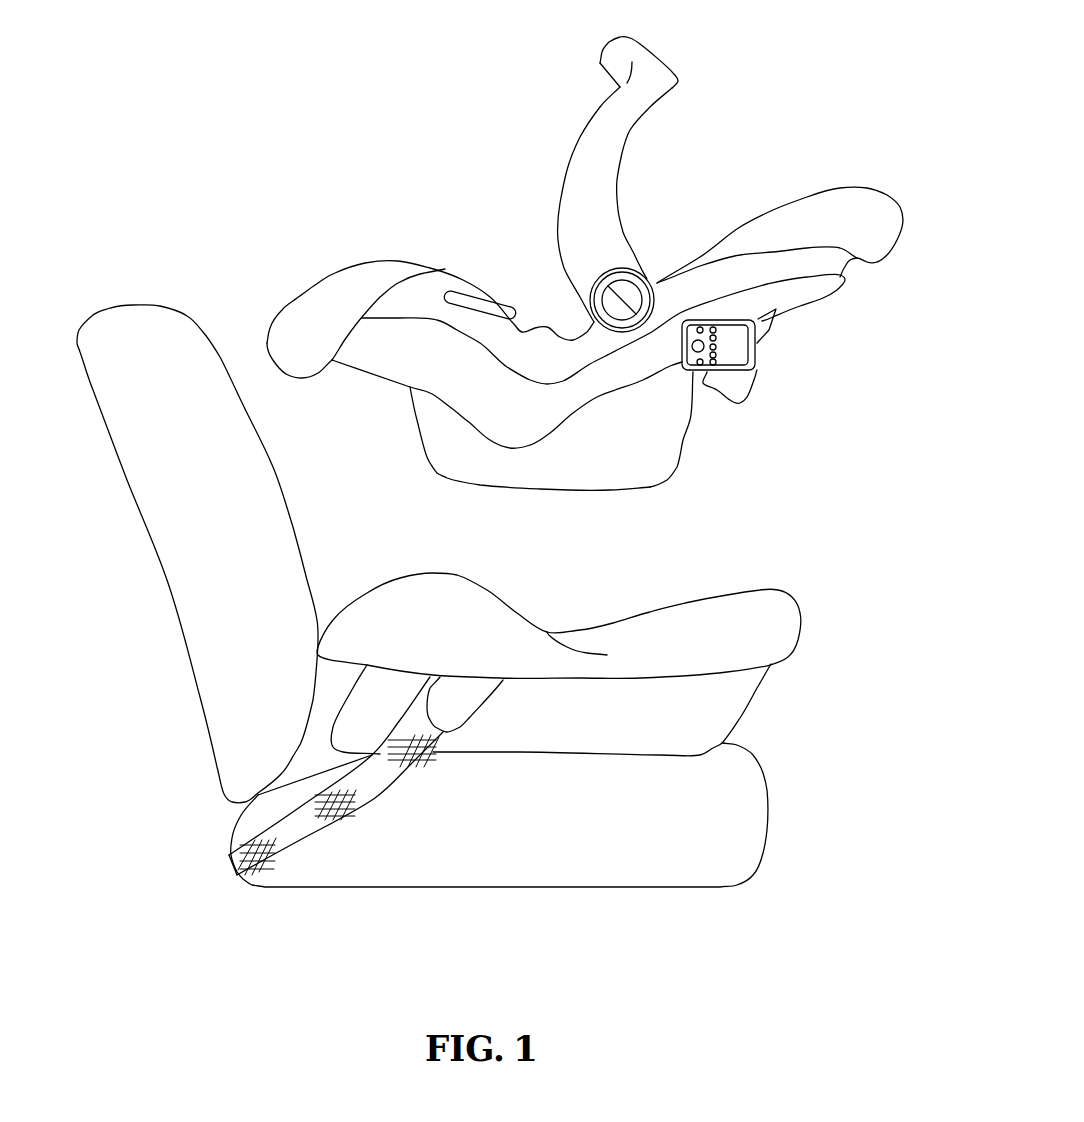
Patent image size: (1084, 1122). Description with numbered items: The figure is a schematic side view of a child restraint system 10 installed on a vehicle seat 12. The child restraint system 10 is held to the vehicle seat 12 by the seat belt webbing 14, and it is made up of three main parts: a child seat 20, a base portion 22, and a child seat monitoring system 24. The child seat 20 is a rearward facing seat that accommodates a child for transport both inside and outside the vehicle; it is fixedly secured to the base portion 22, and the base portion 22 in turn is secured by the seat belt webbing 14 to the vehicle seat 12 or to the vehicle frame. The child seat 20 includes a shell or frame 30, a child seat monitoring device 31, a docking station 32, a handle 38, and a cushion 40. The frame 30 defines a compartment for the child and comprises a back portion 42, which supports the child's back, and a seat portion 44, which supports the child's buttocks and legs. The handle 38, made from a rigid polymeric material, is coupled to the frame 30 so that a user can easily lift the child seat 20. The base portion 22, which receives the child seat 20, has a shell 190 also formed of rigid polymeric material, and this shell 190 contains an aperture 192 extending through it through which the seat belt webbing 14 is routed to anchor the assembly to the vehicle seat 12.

The child restraint system 10 is at (907, 222).
The vehicle seat 12 is at (740, 863).
The seat belt webbing 14 is at (300, 837).
The child seat 20 is at (847, 282).
The base portion 22 is at (810, 640).
The child seat monitoring system 24 is at (722, 318).
The shell or frame 30 is at (690, 420).
The child seat monitoring device 31 is at (757, 373).
The docking station 32 is at (757, 343).
The handle 38 is at (650, 68).
The cushion 40 is at (337, 273).
The back portion 42 is at (603, 397).
The seat portion 44 is at (407, 387).
The shell 190 is at (746, 688).
The aperture 192 is at (440, 688).